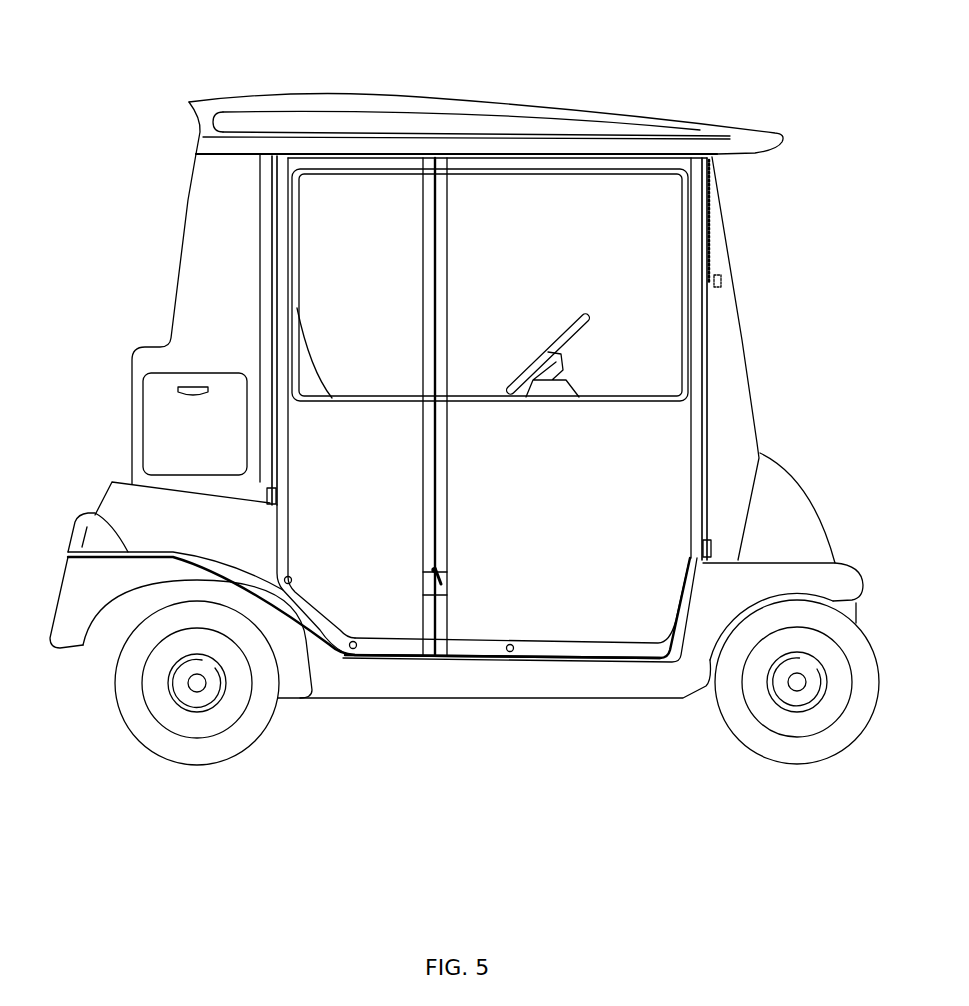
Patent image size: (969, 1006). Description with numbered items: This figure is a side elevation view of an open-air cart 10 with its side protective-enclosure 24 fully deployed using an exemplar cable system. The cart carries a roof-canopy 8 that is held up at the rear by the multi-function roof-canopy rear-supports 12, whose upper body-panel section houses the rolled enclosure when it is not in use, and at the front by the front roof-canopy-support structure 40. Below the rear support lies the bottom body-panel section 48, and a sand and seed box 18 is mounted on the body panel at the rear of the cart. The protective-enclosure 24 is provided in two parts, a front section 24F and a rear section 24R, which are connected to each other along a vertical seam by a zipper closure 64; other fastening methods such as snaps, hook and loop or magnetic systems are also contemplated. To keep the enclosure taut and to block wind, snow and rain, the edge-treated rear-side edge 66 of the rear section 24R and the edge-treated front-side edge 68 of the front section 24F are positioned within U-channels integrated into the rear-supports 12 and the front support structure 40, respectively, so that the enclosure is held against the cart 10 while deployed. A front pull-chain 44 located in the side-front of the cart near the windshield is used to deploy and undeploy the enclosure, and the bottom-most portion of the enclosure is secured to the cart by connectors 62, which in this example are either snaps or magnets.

The open-air cart 10 is at (746, 40).
The roof-canopy 8 is at (757, 131).
The multi-function roof-canopy rear-supports, upper body-panel section 12 is at (152, 260).
The sand and seed box 18 is at (207, 447).
The bottom body-panel section 48 is at (198, 535).
The front roof-canopy-support structure 40 is at (742, 340).
The front pull-chain 44 is at (712, 220).
The protective-enclosure 24 is at (576, 666).
The protective-enclosure rear-section 24R is at (468, 452).
The protective-enclosure front-section 24F is at (684, 359).
The rear-side edge of rear section 66 is at (290, 443).
The zipper closure 64 is at (447, 466).
The front-side edge of front section 68 is at (682, 445).
The connectors 62 is at (350, 657).